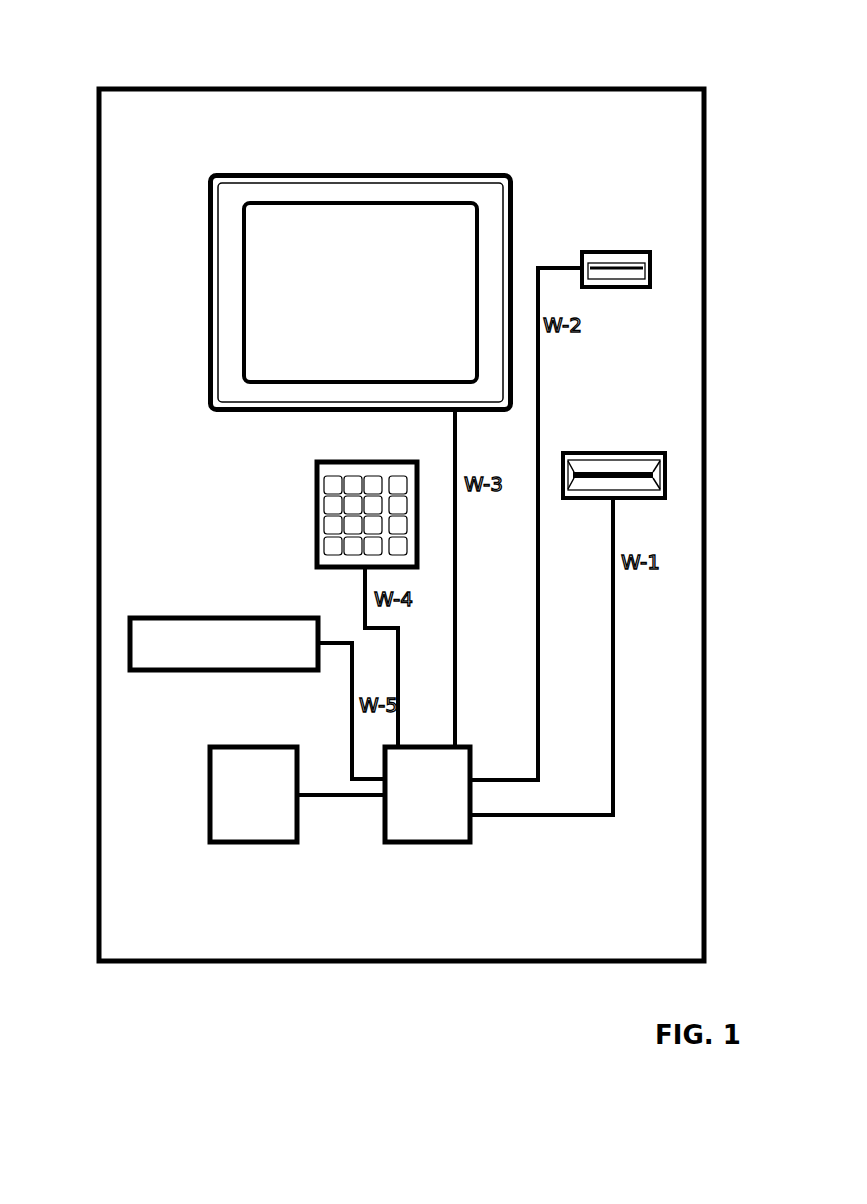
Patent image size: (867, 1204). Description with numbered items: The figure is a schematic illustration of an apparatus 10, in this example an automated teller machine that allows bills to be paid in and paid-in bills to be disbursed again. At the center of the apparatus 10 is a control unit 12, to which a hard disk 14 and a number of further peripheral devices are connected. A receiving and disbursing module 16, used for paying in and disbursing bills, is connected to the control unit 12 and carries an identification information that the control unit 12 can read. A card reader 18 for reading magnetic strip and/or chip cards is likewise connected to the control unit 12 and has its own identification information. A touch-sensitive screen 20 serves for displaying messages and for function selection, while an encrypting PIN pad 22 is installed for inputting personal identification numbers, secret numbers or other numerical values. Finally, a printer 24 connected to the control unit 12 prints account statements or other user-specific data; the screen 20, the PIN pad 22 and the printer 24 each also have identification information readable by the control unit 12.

The apparatus 10 is at (186, 88).
The control unit 12 is at (427, 842).
The hard disk 14 is at (210, 797).
The receiving and disbursing module 16 is at (665, 476).
The card reader 18 is at (650, 268).
The touch-sensitive screen 20 is at (277, 173).
The encrypting PIN pad 22 is at (315, 518).
The printer 24 is at (130, 643).